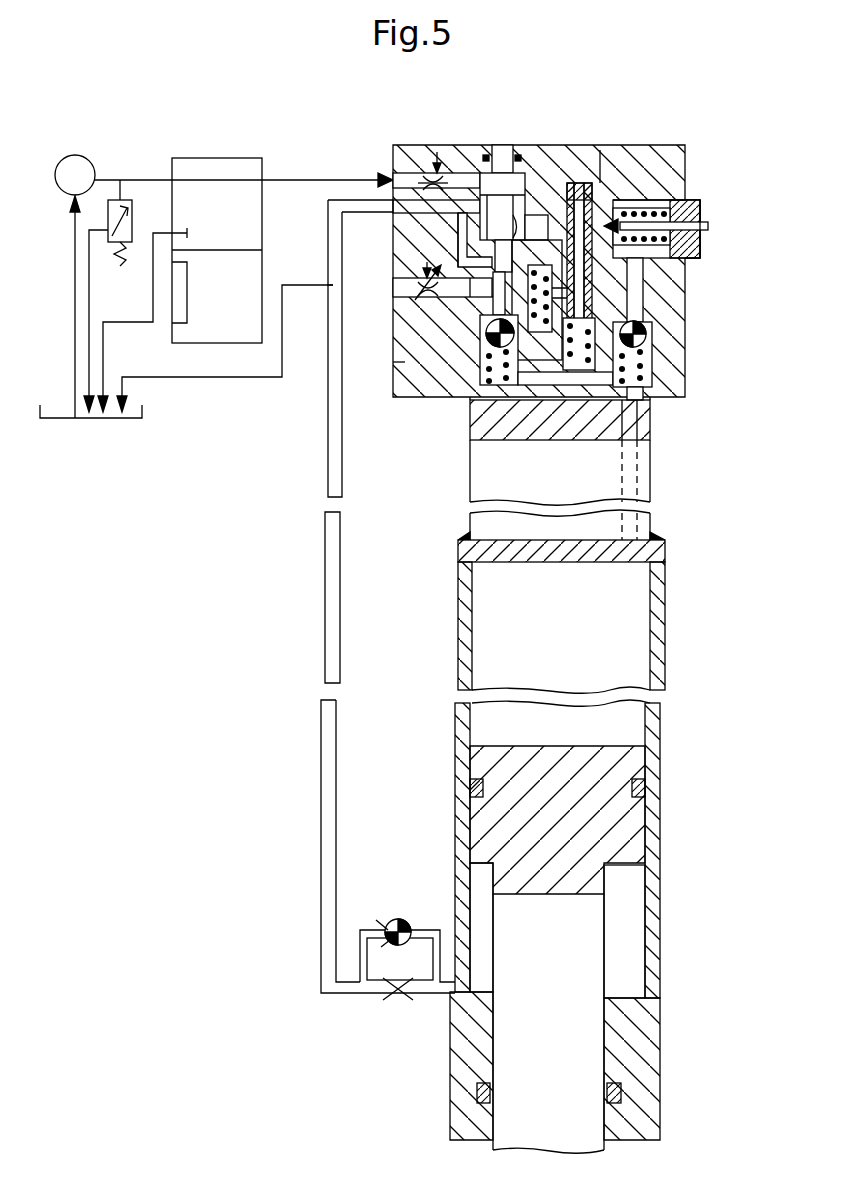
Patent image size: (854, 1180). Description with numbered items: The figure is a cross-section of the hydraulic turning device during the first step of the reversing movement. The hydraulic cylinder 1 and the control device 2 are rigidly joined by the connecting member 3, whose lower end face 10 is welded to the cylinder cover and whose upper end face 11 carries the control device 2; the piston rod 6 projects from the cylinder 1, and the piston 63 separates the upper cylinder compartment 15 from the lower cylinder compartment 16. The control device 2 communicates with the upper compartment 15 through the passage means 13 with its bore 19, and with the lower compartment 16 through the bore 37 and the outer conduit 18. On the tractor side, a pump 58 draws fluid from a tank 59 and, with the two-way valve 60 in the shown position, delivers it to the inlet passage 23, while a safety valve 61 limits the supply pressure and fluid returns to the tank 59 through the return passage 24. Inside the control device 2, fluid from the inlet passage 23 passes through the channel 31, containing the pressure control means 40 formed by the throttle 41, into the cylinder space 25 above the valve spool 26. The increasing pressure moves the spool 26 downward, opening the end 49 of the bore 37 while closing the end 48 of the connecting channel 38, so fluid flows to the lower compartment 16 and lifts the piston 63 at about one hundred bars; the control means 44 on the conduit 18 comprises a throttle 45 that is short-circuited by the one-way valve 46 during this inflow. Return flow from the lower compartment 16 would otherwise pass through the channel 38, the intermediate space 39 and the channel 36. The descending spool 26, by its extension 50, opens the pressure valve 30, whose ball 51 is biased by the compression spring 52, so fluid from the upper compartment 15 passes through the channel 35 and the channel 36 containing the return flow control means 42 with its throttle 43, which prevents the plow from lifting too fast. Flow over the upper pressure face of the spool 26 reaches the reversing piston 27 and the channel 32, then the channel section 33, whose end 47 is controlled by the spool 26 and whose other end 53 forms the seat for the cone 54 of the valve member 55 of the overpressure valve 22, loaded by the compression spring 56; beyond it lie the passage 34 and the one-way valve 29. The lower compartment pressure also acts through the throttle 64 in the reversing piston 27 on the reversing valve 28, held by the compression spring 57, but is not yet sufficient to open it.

The hydraulic cylinder 1 is at (656, 724).
The control device 2 is at (643, 162).
The connecting member 3 is at (645, 488).
The piston rod 6 is at (582, 1041).
The lower end face 10 is at (570, 560).
The upper end face 11 is at (555, 405).
The passage means 13 is at (650, 528).
The upper cylinder compartment 15 is at (625, 625).
The lower cylinder compartment 16 is at (628, 913).
The outer conduit 18 is at (338, 606).
The bore 19 is at (632, 465).
The overpressure valve 22 is at (714, 246).
The inlet passage 23 is at (285, 180).
The return passage 24 is at (232, 380).
The cylinder space 25 is at (500, 195).
The valve spool 26 is at (513, 175).
The reversing piston 27 is at (628, 175).
The reversing valve 28 is at (644, 333).
The one-way valve 29 is at (653, 355).
The pressure valve 30 is at (430, 365).
The channel 31 is at (395, 165).
The channel 32 is at (590, 200).
The channel section 33 is at (579, 190).
The passage 34 is at (636, 280).
The channel 35 is at (495, 420).
The channel 36 is at (425, 292).
The bore 37 is at (490, 168).
The connecting channel 38 is at (398, 194).
The intermediate space 39 is at (333, 350).
The pressure control means 40 is at (443, 178).
The throttle 41 is at (432, 168).
The return flow control means 42 is at (462, 262).
The throttle 43 is at (465, 318).
The control means 44 is at (366, 1004).
The throttle 45 is at (398, 1000).
The one-way valve 46 is at (402, 918).
The end of channel section 47 is at (538, 215).
The end of channel 48 is at (530, 290).
The end of bore 49 is at (462, 236).
The extension 50 is at (488, 345).
The ball 51 is at (432, 395).
The compression spring 52 is at (488, 378).
The other end of channel section 53 is at (655, 212).
The cone 54 is at (690, 216).
The valve member 55 is at (708, 227).
The compression spring 56 is at (688, 266).
The compression spring 57 is at (600, 305).
The pump 58 is at (80, 165).
The tank 59 is at (122, 425).
The two-way valve 60 is at (205, 150).
The safety valve 61 is at (126, 218).
The piston 63 is at (606, 820).
The throttle 64 is at (640, 185).